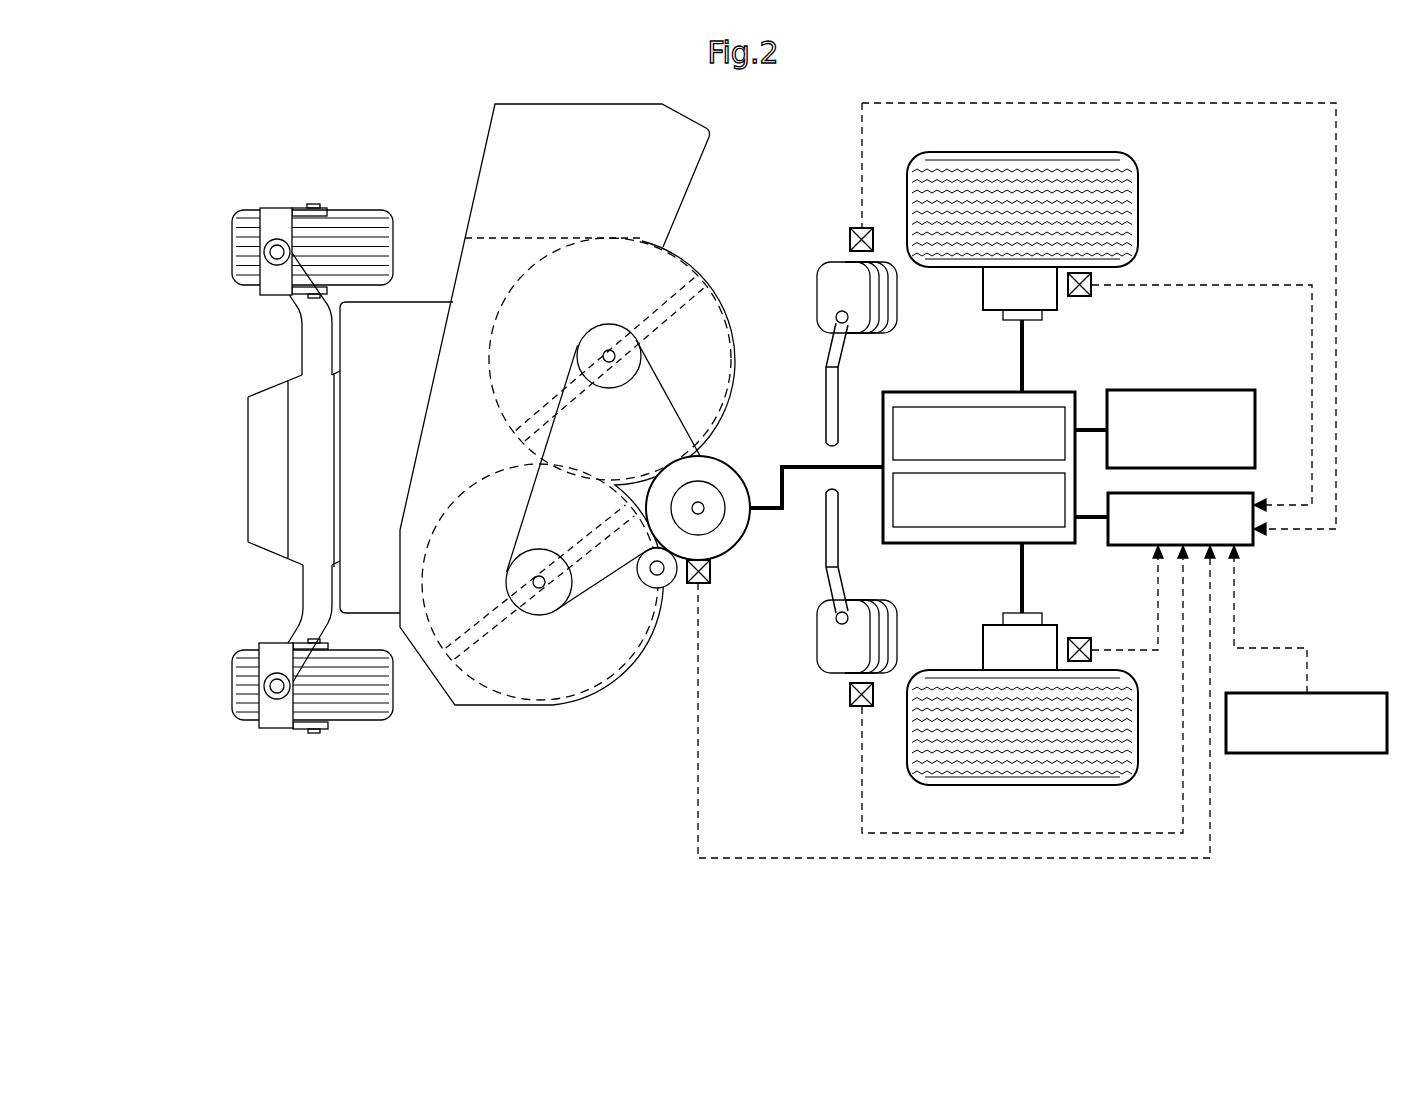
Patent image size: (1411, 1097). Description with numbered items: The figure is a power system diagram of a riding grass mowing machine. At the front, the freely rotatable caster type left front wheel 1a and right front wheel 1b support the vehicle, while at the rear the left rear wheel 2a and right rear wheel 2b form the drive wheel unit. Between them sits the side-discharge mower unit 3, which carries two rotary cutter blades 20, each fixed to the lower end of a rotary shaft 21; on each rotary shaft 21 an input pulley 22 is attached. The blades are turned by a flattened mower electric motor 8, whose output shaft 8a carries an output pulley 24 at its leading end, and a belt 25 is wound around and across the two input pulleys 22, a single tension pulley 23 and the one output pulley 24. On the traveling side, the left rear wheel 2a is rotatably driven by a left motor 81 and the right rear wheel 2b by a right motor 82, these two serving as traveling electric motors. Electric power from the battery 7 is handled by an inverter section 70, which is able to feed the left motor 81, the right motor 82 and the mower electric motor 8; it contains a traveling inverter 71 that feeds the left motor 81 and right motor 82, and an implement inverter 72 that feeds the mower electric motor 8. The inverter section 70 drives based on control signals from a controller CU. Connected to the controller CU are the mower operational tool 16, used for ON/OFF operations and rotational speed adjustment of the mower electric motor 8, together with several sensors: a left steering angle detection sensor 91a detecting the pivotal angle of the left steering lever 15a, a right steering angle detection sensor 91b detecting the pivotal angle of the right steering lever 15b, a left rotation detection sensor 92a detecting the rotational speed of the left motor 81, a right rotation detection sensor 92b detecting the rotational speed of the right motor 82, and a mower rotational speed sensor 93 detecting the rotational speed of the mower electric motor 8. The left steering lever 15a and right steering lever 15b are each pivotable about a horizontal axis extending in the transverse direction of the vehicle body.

The left front wheel 1a is at (232, 688).
The right front wheel 1b is at (232, 250).
The left rear wheel 2a is at (1008, 785).
The right rear wheel 2b is at (1010, 152).
The mower unit 3 is at (438, 690).
The battery 7 is at (1258, 430).
The mower electric motor 8 is at (720, 538).
The output shaft 8a is at (702, 504).
The left steering lever 15a is at (838, 530).
The right steering lever 15b is at (838, 403).
The mower operational tool 16 is at (1307, 753).
The rotary cutter blade 20 is at (551, 393).
The rotary shaft 21 is at (608, 350).
The input pulley 22 is at (590, 340).
The tension pulley 23 is at (645, 578).
The output pulley 24 is at (675, 521).
The belt 25 is at (668, 400).
The inverter section 70 is at (953, 392).
The traveling inverter 71 is at (1040, 407).
The implement inverter 72 is at (950, 530).
The left motor 81 is at (1003, 649).
The right motor 82 is at (1003, 286).
The left steering angle detection sensor 91a is at (850, 694).
The right steering angle detection sensor 91b is at (850, 244).
The left rotation detection sensor 92a is at (1080, 638).
The right rotation detection sensor 92b is at (1078, 300).
The mower rotational speed sensor 93 is at (692, 586).
The controller CU is at (1250, 550).